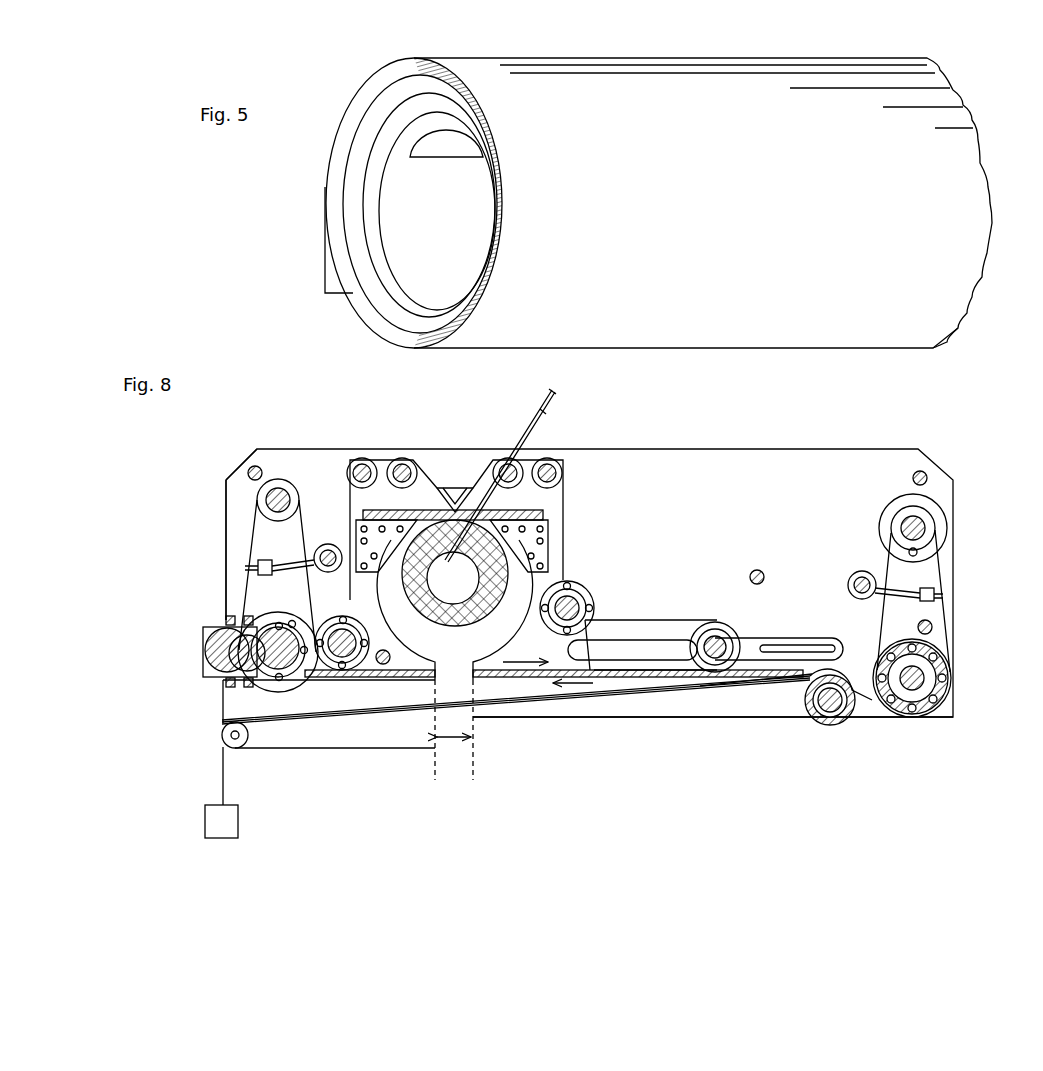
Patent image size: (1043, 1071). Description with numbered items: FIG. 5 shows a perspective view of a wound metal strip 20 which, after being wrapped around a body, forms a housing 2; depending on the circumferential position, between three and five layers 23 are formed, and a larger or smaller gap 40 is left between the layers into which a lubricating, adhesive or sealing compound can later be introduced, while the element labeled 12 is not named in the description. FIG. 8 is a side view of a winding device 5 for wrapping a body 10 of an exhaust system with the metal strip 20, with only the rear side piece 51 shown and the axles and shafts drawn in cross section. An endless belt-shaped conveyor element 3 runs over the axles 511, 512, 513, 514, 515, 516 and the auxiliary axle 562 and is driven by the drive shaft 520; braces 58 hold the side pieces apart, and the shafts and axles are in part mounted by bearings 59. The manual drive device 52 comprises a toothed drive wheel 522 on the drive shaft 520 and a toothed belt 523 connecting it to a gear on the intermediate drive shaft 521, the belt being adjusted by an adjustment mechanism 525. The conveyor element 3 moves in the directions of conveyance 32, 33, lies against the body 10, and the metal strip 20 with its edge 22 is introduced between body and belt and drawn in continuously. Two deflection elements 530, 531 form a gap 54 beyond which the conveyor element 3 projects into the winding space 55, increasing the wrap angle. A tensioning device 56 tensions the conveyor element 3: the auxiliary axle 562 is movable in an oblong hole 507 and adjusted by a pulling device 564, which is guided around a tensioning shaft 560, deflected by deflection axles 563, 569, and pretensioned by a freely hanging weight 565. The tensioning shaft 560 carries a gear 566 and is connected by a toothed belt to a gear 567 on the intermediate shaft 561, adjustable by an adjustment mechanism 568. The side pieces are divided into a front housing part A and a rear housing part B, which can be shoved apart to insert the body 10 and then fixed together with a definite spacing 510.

In FIG. 5, the housing 2 is at (903, 50).
In FIG. 5, the housing wall 12 is at (988, 327).
In FIG. 5, the metal strip 20 is at (700, 201).
In FIG. 8, the metal strip 20 is at (545, 411).
In FIG. 5, the layers 23 is at (336, 202).
In FIG. 5, the gap 40 is at (350, 250).
In FIG. 8, the winding device 5 is at (945, 430).
In FIG. 8, the rear side piece 51 is at (825, 465).
In FIG. 8, the braces 58 is at (250, 465).
In FIG. 8, the manual drive device 52 is at (228, 538).
In FIG. 8, the toothed belt 523 is at (262, 493).
In FIG. 8, the intermediate drive shaft 521 is at (285, 490).
In FIG. 8, the adjustment mechanism 525 is at (327, 543).
In FIG. 8, the toothed drive wheel 522 is at (227, 620).
In FIG. 8, the drive shaft 520 is at (210, 660).
In FIG. 8, the bearings 59 is at (292, 620).
In FIG. 8, the axle 516 is at (343, 662).
In FIG. 8, the winding space 55 is at (405, 625).
In FIG. 8, the axle 511 is at (365, 460).
In FIG. 8, the axle 512 is at (404, 458).
In FIG. 8, the axle 513 is at (506, 460).
In FIG. 8, the axle 514 is at (550, 460).
In FIG. 8, the deflection element 530 is at (437, 490).
In FIG. 8, the gap 54 is at (453, 510).
In FIG. 8, the deflection element 531 is at (545, 512).
In FIG. 8, the body 10 is at (470, 607).
In FIG. 8, the conveyor element 3 is at (450, 628).
In FIG. 8, the edge 22 is at (552, 391).
In FIG. 8, the axle 515 is at (585, 603).
In FIG. 8, the oblong hole 507 is at (640, 655).
In FIG. 8, the auxiliary axle 562 is at (715, 672).
In FIG. 8, the pulling device 564 is at (543, 700).
In FIG. 8, the deflection axle 563 is at (245, 745).
In FIG. 8, the weight 565 is at (210, 825).
In FIG. 8, the spacing 510 is at (457, 740).
In FIG. 8, the direction of conveyance 33 is at (513, 660).
In FIG. 8, the direction of conveyance 32 is at (580, 693).
In FIG. 8, the front housing part A is at (383, 790).
In FIG. 8, the rear housing part B is at (770, 785).
In FIG. 8, the deflection axle 569 is at (830, 726).
In FIG. 8, the gear 566 is at (952, 580).
In FIG. 8, the intermediate shaft 561 is at (935, 510).
In FIG. 8, the gear 567 is at (940, 545).
In FIG. 8, the tensioning shaft 560 is at (950, 665).
In FIG. 8, the adjustment mechanism 568 is at (858, 555).
In FIG. 8, the tensioning device 56 is at (942, 766).